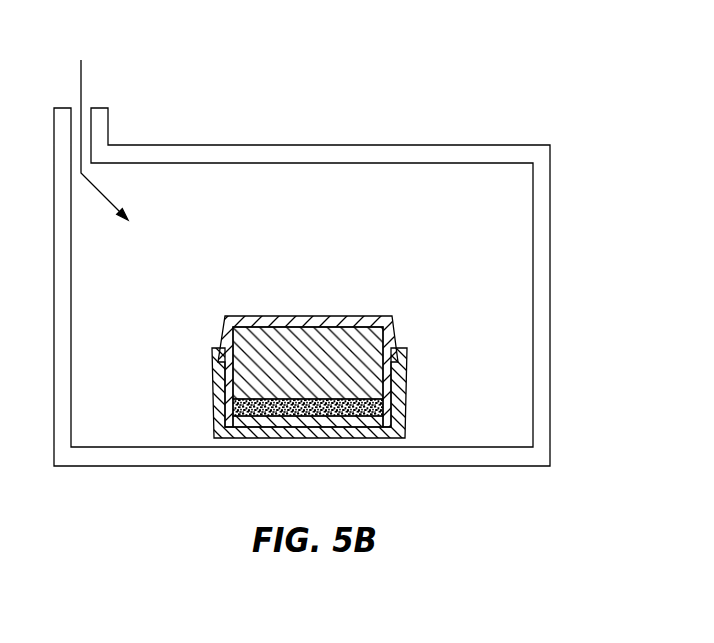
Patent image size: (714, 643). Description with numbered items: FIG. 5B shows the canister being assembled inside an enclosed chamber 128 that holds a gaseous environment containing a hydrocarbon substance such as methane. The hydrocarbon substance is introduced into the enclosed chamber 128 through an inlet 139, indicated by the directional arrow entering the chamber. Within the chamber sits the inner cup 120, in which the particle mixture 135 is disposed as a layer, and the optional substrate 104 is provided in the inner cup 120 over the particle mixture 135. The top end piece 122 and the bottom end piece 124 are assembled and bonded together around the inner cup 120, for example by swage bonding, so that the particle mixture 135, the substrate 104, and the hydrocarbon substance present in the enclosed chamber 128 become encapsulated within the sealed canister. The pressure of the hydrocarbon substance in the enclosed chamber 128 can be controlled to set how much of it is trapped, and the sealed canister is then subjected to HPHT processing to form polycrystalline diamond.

The substrate 104 is at (307, 352).
The inner cup 120 is at (387, 375).
The top end piece 122 is at (393, 327).
The bottom end piece 124 is at (390, 437).
The enclosed chamber 128 is at (540, 272).
The particle mixture 135 is at (238, 405).
The inlet 139 is at (120, 103).